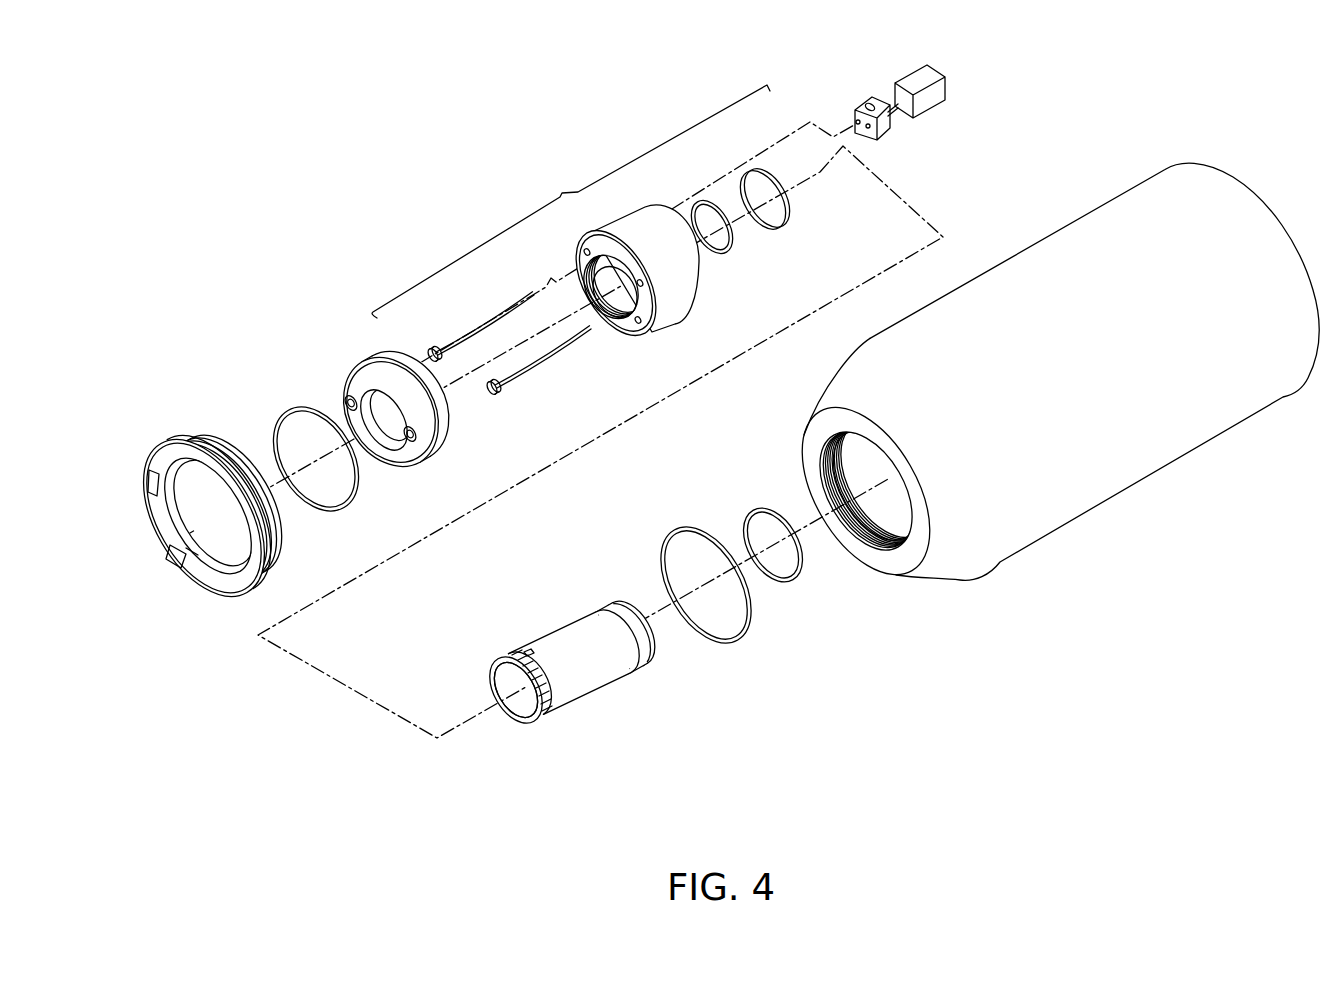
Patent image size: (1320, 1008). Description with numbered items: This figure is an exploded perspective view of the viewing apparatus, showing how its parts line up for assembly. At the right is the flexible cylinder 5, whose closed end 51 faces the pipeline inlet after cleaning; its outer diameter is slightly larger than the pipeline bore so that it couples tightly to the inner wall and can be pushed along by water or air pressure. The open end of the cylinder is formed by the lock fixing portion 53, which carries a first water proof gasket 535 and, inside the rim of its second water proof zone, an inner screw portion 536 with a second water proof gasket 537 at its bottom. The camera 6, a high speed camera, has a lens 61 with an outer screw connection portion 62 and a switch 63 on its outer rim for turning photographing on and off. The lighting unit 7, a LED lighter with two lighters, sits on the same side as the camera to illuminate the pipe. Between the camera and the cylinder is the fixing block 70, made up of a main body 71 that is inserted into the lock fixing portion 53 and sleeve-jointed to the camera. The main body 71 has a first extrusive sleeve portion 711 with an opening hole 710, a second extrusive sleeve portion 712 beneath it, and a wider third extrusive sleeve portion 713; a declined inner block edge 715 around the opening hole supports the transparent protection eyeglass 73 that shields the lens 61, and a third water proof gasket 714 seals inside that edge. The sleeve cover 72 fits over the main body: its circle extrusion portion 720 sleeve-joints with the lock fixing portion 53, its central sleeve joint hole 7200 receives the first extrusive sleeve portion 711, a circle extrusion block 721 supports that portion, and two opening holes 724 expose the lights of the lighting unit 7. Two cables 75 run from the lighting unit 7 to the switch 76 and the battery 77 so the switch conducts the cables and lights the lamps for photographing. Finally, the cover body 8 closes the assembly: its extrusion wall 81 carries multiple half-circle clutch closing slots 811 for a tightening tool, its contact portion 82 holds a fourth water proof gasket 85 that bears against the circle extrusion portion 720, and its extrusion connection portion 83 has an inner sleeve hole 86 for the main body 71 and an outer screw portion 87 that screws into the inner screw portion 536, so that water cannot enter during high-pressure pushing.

The flexible cylinder 5 is at (1047, 381).
The closed end 51 is at (1240, 175).
The lock fixing portion 53 is at (875, 522).
The first water proof gasket 535 is at (747, 513).
The inner screw portion 536 is at (878, 540).
The second water proof gasket 537 is at (660, 537).
The camera 6 is at (545, 666).
The lens 61 is at (488, 677).
The outer screw connection portion 62 is at (537, 713).
The switch 63 is at (523, 652).
The lighting unit 7 is at (614, 264).
The fixing block 70 is at (571, 201).
The main body 71 is at (656, 284).
The opening hole 710 is at (607, 337).
The first extrusive sleeve portion 711 is at (612, 332).
The second extrusive sleeve portion 712 is at (657, 322).
The third extrusive sleeve portion 713 is at (688, 287).
The third water proof gasket 714 is at (735, 247).
The declined inner block edge 715 is at (608, 342).
The sleeve cover 72 is at (388, 402).
The circle extrusion portion 720 is at (417, 453).
The circle extrusion block 721 is at (388, 457).
The opening holes 724 is at (348, 400).
The sleeve joint hole 7200 is at (378, 405).
The transparent protection eyeglass 73 is at (753, 175).
The cables 75 is at (503, 313).
The switch 76 is at (860, 98).
The battery 77 is at (905, 77).
The cover body 8 is at (211, 502).
The extrusion wall 81 is at (153, 457).
The clutch closing slots 811 is at (158, 540).
The contact portion 82 is at (228, 587).
The extrusion connection portion 83 is at (280, 522).
The fourth water proof gasket 85 is at (277, 412).
The sleeve hole 86 is at (203, 552).
The outer screw portion 87 is at (243, 460).